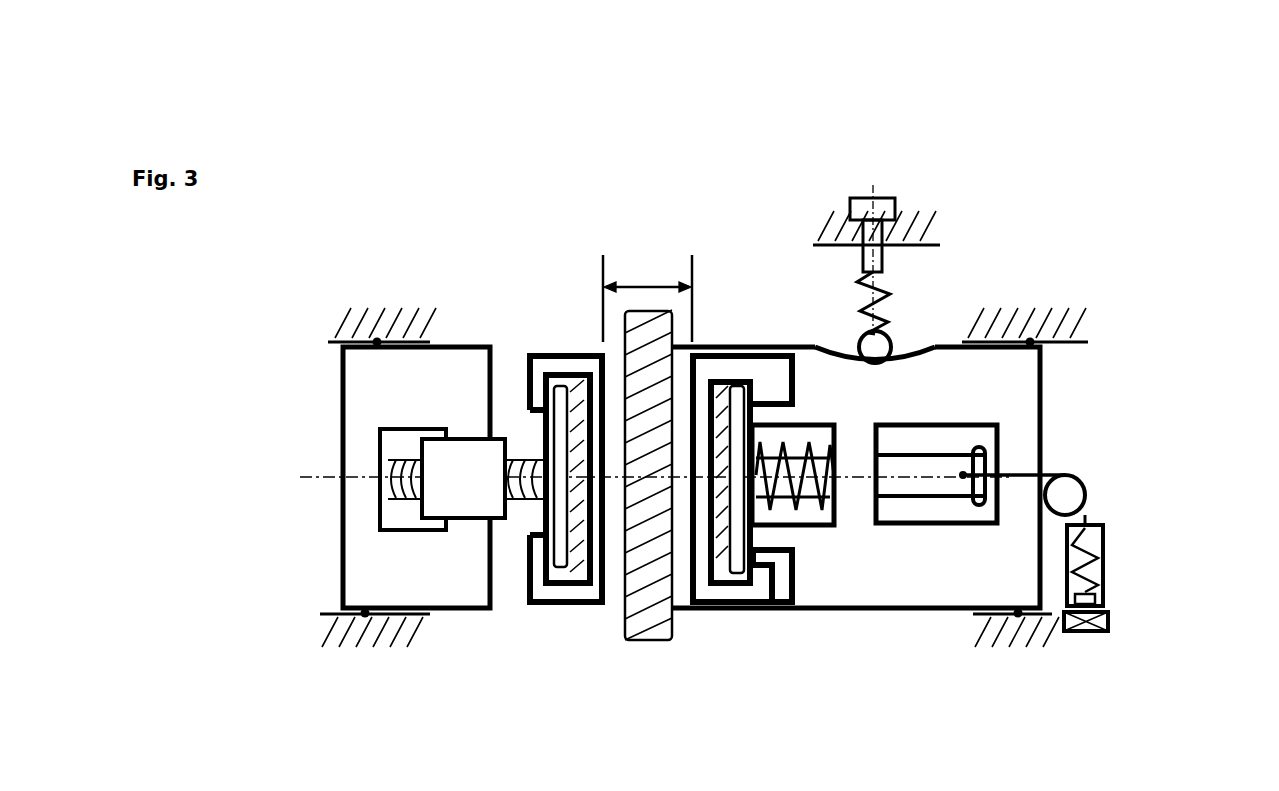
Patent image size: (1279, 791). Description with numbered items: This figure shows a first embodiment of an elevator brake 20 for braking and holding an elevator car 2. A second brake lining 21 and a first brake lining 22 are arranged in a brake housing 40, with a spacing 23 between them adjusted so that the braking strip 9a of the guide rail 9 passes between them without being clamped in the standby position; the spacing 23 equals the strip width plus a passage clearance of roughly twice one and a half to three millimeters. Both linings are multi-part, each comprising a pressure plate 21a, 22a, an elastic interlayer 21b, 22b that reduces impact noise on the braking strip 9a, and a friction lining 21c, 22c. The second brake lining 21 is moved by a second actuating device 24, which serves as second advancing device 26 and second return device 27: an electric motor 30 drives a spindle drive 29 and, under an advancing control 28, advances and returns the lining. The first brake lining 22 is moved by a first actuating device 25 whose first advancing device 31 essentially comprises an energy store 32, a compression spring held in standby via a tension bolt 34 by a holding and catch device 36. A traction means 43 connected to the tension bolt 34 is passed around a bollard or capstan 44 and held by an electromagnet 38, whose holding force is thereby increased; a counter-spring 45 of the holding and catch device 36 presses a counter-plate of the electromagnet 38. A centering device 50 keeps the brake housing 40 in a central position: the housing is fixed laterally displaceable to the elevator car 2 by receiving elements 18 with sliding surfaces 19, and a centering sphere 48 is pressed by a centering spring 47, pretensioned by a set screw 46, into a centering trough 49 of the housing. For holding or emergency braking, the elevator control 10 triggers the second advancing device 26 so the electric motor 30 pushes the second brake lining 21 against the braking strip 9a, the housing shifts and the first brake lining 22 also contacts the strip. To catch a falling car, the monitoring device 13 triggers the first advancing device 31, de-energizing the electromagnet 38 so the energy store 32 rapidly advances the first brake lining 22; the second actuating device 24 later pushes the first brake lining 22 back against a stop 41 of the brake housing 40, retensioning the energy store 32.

The elevator car 2 is at (720, 345).
The guide rail 9 is at (662, 378).
The braking strip 9a is at (643, 343).
The elevator control 10 is at (374, 568).
The monitoring device 13 is at (1077, 642).
The receiving element 18 is at (850, 210).
The sliding surfaces 19 is at (378, 338).
The elevator brake 20 is at (326, 180).
The second brake lining 21 is at (544, 558).
The pressure plate 21a is at (572, 566).
The elastic interlayer 21b is at (583, 582).
The friction lining 21c is at (601, 590).
The first brake lining 22 is at (734, 435).
The pressure plate 22a is at (740, 570).
The elastic interlayer 22b is at (714, 585).
The friction lining 22c is at (735, 410).
The spacing 23 is at (635, 287).
The second actuating device 24 is at (544, 307).
The first actuating device 25 is at (874, 589).
The second advancing device 26 is at (544, 307).
The second return device 27 is at (507, 416).
The advancing control 28 is at (427, 573).
The spindle drive 29 is at (427, 573).
The electric motor 30 is at (477, 507).
The first advancing device 31 is at (874, 589).
The energy store 32 is at (810, 500).
The tension bolt 34 is at (925, 480).
The holding and catch device 36 is at (1105, 536).
The electromagnet 38 is at (1123, 614).
The brake housing 40 is at (375, 408).
The stop 41 is at (752, 402).
The traction means 43 is at (1007, 472).
The bollard or capstan 44 is at (1065, 502).
The counter-spring 45 is at (1105, 557).
The set screw 46 is at (870, 195).
The centering spring 47 is at (884, 290).
The centering sphere 48 is at (900, 332).
The centering trough 49 is at (905, 356).
The centering device 50 is at (922, 196).